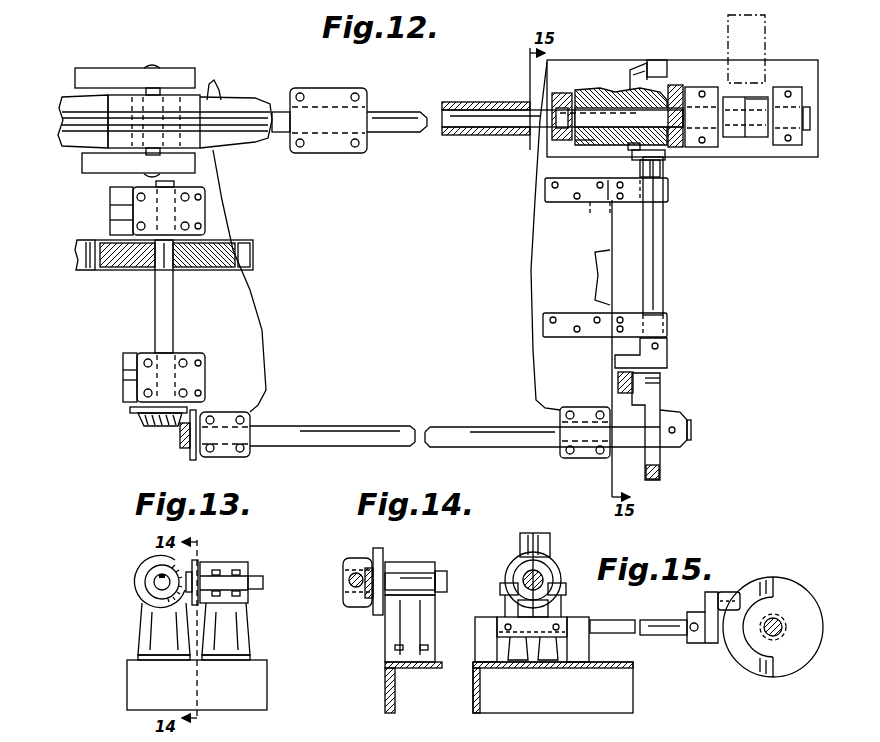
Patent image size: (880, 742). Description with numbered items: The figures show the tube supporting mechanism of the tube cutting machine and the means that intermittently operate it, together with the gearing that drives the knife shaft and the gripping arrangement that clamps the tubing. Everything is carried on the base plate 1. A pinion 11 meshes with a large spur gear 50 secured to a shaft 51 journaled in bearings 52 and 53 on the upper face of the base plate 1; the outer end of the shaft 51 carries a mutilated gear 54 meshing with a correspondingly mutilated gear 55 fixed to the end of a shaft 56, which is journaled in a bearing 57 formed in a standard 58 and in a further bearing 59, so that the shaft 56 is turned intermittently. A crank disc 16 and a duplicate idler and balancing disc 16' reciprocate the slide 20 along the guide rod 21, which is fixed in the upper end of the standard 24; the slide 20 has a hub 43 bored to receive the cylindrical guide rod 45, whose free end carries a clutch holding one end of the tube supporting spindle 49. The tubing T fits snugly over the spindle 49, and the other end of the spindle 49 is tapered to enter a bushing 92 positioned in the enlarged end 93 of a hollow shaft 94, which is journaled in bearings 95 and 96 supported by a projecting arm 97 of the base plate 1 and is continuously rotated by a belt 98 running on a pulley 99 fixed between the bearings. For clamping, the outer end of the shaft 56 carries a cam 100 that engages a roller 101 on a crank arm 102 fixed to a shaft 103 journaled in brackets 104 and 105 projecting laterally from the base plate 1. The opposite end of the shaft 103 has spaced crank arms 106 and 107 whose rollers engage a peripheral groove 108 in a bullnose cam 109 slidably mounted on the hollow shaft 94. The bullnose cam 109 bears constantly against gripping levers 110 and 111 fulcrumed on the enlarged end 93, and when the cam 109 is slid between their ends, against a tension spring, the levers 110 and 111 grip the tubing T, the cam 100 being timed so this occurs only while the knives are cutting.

In FIG. 12, the base plate 1 is at (531, 268).
In FIG. 13, the base plate 1 is at (262, 670).
In FIG. 14, the base plate 1 is at (384, 672).
In FIG. 12, the pinion 11 is at (84, 266).
In FIG. 12, the crank disc 16 is at (127, 173).
In FIG. 12, the idler and balancing crank disc 16' is at (135, 63).
In FIG. 12, the slide 20 is at (190, 98).
In FIG. 12, the guide rod 21 is at (78, 110).
In FIG. 12, the standard 24 is at (332, 94).
In FIG. 12, the hub 43 is at (235, 100).
In FIG. 12, the cylindrical guide rod 45 is at (398, 128).
In FIG. 12, the tube supporting spindle 49 is at (458, 112).
In FIG. 14, the tube supporting spindle 49 is at (522, 570).
In FIG. 12, the tubing T is at (503, 104).
In FIG. 12, the large spur gear 50 is at (244, 255).
In FIG. 12, the shaft 51 is at (166, 305).
In FIG. 13, the shaft 51 is at (155, 580).
In FIG. 14, the shaft 51 is at (442, 572).
In FIG. 12, the bearing 52 is at (187, 210).
In FIG. 12, the bearing 53 is at (182, 355).
In FIG. 12, the mutilated gear 54 is at (150, 420).
In FIG. 13, the mutilated gear 54 is at (140, 600).
In FIG. 14, the mutilated gear 54 is at (375, 552).
In FIG. 12, the mutilated gear 55 is at (180, 440).
In FIG. 13, the mutilated gear 55 is at (200, 584).
In FIG. 14, the mutilated gear 55 is at (356, 560).
In FIG. 12, the shaft 56 is at (345, 426).
In FIG. 13, the shaft 56 is at (260, 590).
In FIG. 15, the shaft 56 is at (782, 636).
In FIG. 12, the bearing 57 is at (240, 412).
In FIG. 13, the bearing 57 is at (244, 568).
In FIG. 13, the standard 58 is at (240, 618).
In FIG. 14, the standard 58 is at (386, 632).
In FIG. 12, the bearing 59 is at (558, 452).
In FIG. 12, the bushing 92 is at (562, 93).
In FIG. 12, the enlarged end of hollow shaft 93 is at (598, 92).
In FIG. 12, the hollow shaft 94 is at (676, 86).
In FIG. 12, the bearing 95 is at (710, 148).
In FIG. 12, the bearing 96 is at (785, 146).
In FIG. 12, the projecting arm 97 is at (752, 138).
In FIG. 12, the belt 98 is at (762, 47).
In FIG. 12, the pulley 99 is at (760, 97).
In FIG. 12, the cam 100 is at (662, 392).
In FIG. 15, the cam 100 is at (822, 576).
In FIG. 12, the roller 101 is at (617, 381).
In FIG. 15, the roller 101 is at (736, 592).
In FIG. 12, the crank arm 102 is at (650, 360).
In FIG. 12, the shaft 103 is at (657, 62).
In FIG. 14, the shaft 103 is at (622, 602).
In FIG. 15, the shaft 103 is at (702, 617).
In FIG. 12, the bracket 104 is at (668, 322).
In FIG. 12, the bracket 105 is at (670, 198).
In FIG. 12, the crank arm 106 is at (664, 164).
In FIG. 12, the crank arm 107 is at (634, 72).
In FIG. 12, the peripheral groove 108 is at (628, 146).
In FIG. 12, the bullnose cam 109 is at (590, 142).
In FIG. 14, the gripping lever 110 is at (540, 535).
In FIG. 14, the gripping lever 111 is at (500, 612).